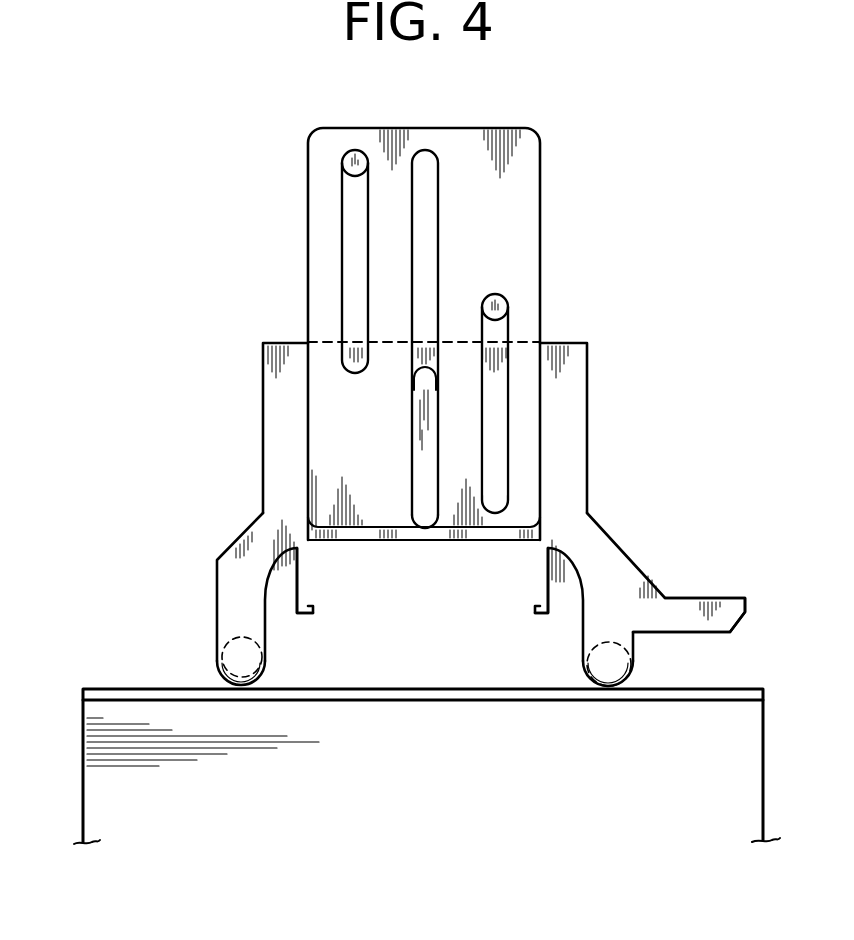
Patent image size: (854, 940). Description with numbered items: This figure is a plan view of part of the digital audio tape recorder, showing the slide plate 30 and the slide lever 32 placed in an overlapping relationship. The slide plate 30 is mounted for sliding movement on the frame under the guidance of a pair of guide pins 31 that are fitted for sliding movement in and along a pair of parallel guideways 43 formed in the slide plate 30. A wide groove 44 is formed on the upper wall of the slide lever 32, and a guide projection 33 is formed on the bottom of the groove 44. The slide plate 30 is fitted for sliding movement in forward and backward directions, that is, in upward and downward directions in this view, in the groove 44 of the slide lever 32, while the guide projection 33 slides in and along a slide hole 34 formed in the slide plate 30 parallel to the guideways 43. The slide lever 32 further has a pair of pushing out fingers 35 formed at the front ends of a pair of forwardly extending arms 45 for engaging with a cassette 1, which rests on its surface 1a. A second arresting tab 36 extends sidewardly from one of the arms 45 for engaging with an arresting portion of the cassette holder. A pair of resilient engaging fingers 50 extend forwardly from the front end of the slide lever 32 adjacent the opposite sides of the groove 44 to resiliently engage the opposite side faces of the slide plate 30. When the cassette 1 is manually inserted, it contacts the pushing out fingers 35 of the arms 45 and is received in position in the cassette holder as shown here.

The cassette 1 is at (93, 780).
The upper surface of base plate 1a is at (151, 690).
The slide plate 30 is at (528, 193).
The guide pins 31 is at (343, 168).
The slide lever 32 is at (587, 440).
The guide projection 33 is at (417, 455).
The slide hole 34 is at (430, 160).
The pushing out fingers 35 is at (232, 641).
The second arresting tab 36 is at (707, 590).
The guideways 43 is at (498, 387).
The wide groove 44 is at (312, 472).
The forwardly extending arms 45 is at (242, 572).
The resilient engaging fingers 50 is at (311, 614).